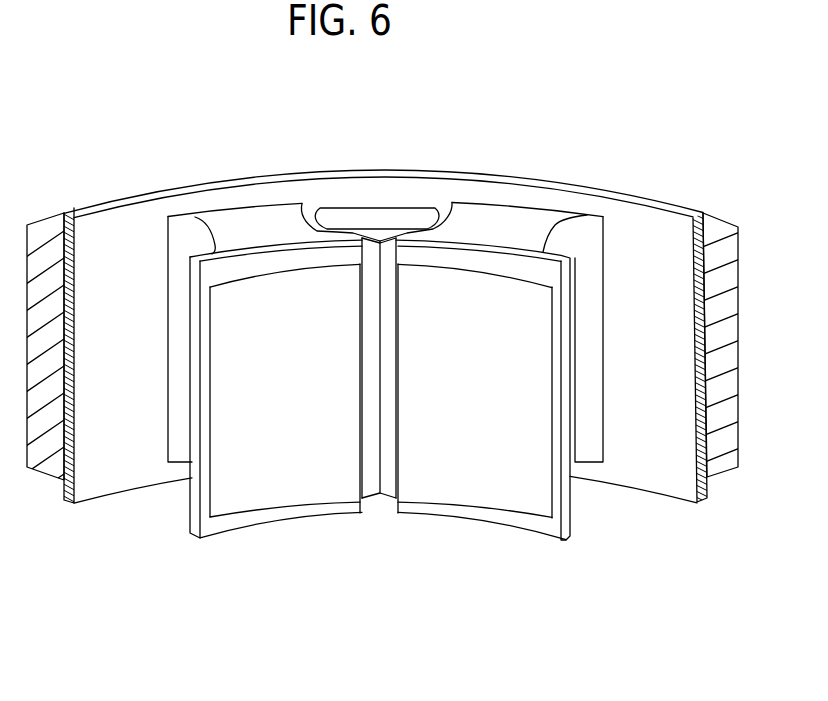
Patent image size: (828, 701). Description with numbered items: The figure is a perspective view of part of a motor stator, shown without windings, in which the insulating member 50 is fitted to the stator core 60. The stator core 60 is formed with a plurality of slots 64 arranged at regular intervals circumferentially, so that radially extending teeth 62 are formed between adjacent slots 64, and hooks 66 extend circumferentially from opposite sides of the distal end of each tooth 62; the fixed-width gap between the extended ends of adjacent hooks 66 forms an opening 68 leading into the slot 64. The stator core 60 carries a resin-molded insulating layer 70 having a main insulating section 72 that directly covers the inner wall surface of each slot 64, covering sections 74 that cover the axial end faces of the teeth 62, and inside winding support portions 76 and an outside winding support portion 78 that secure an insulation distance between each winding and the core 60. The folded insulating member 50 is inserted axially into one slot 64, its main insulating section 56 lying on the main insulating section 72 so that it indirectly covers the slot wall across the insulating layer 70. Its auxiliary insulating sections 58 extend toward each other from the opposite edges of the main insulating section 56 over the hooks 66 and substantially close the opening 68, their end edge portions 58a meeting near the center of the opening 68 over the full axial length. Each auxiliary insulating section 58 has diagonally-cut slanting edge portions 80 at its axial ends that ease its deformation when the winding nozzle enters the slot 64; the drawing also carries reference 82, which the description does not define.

The insulating member 50 is at (406, 190).
The main insulating section 56 is at (423, 220).
The auxiliary insulating section 58 is at (372, 423).
The end edge portion 58a is at (378, 390).
The stator core 60 is at (738, 257).
The tooth 62 is at (265, 460).
The slot 64 is at (347, 208).
The hook 66 is at (218, 537).
The opening 68 is at (378, 218).
The insulating layer 70 is at (626, 182).
The main insulating section 72 is at (112, 267).
The covering section 74 is at (250, 223).
The inside winding support portion 76 is at (280, 240).
The outside winding support portion 78 is at (200, 200).
The slanting edge portion 80 is at (372, 500).
The web bottom ridge 82 is at (388, 498).